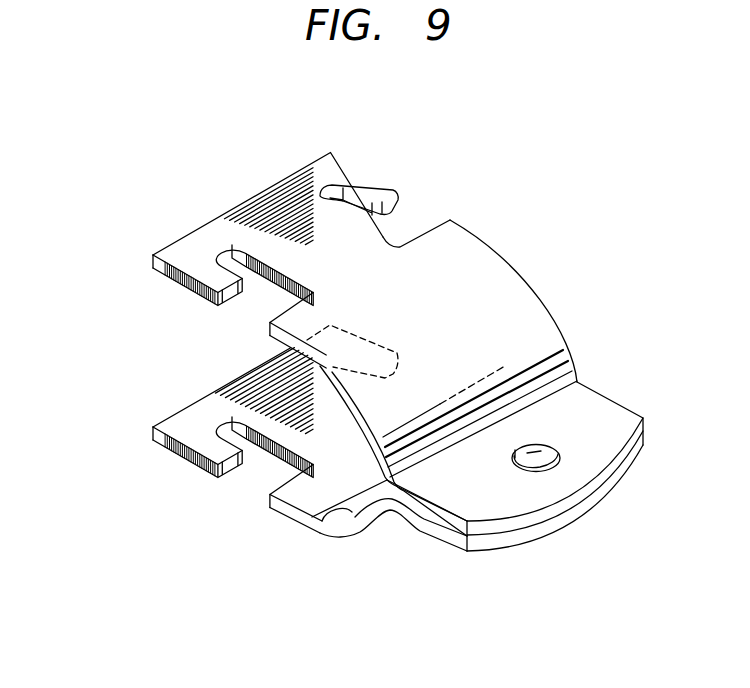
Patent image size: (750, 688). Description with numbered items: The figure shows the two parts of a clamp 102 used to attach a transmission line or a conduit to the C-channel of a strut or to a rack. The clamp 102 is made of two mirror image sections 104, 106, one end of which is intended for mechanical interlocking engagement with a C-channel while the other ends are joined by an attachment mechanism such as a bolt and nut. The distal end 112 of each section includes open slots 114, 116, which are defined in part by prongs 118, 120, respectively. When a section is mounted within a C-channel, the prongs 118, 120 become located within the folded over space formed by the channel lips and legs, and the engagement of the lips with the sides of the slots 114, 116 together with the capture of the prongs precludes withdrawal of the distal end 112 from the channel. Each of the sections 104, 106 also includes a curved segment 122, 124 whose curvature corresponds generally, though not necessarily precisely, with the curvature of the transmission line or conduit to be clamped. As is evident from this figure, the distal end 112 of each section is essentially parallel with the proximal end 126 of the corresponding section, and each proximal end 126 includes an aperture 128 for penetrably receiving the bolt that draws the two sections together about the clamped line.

The clamp 102 is at (566, 155).
The section 104 is at (583, 410).
The section 106 is at (598, 513).
The distal end 112 is at (268, 210).
The open slot 114 is at (276, 278).
The open slot 116 is at (386, 236).
The prong 118 is at (218, 280).
The prong 120 is at (375, 188).
The curved segment 122 is at (513, 291).
The curved segment 124 is at (323, 523).
The proximal end 126 is at (623, 423).
The aperture 128 is at (545, 447).